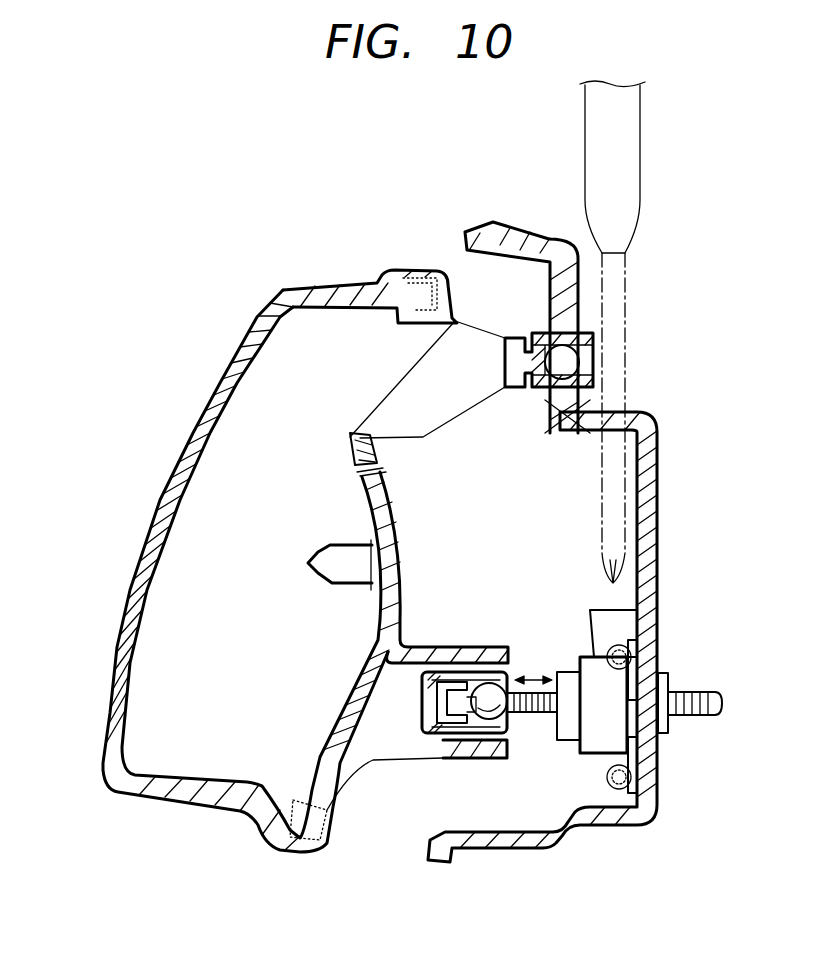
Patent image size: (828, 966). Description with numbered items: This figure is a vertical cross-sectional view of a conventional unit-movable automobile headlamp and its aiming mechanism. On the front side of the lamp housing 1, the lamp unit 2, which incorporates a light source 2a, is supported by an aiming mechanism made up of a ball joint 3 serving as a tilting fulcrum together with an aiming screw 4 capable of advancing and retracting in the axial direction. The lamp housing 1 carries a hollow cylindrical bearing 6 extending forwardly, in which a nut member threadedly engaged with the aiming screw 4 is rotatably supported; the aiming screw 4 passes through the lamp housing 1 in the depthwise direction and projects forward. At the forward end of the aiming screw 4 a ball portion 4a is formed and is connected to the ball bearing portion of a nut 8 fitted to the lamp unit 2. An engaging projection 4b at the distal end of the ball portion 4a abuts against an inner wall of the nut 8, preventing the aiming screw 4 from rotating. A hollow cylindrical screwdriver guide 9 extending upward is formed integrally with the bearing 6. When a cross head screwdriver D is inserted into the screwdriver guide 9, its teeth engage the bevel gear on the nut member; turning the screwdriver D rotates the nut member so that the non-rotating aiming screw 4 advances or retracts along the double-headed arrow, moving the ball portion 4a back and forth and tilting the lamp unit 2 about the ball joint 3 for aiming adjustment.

The lamp housing 1 is at (656, 475).
The lamp unit 2 is at (155, 501).
The light source 2a is at (328, 547).
The ball joint 3 is at (531, 333).
The aiming screw 4 is at (530, 712).
The ball portion 4a is at (488, 712).
The engaging projection 4b is at (443, 728).
The bearing 6 is at (600, 740).
The nut 8 is at (421, 709).
The screwdriver guide 9 is at (590, 627).
The screwdriver D is at (628, 333).